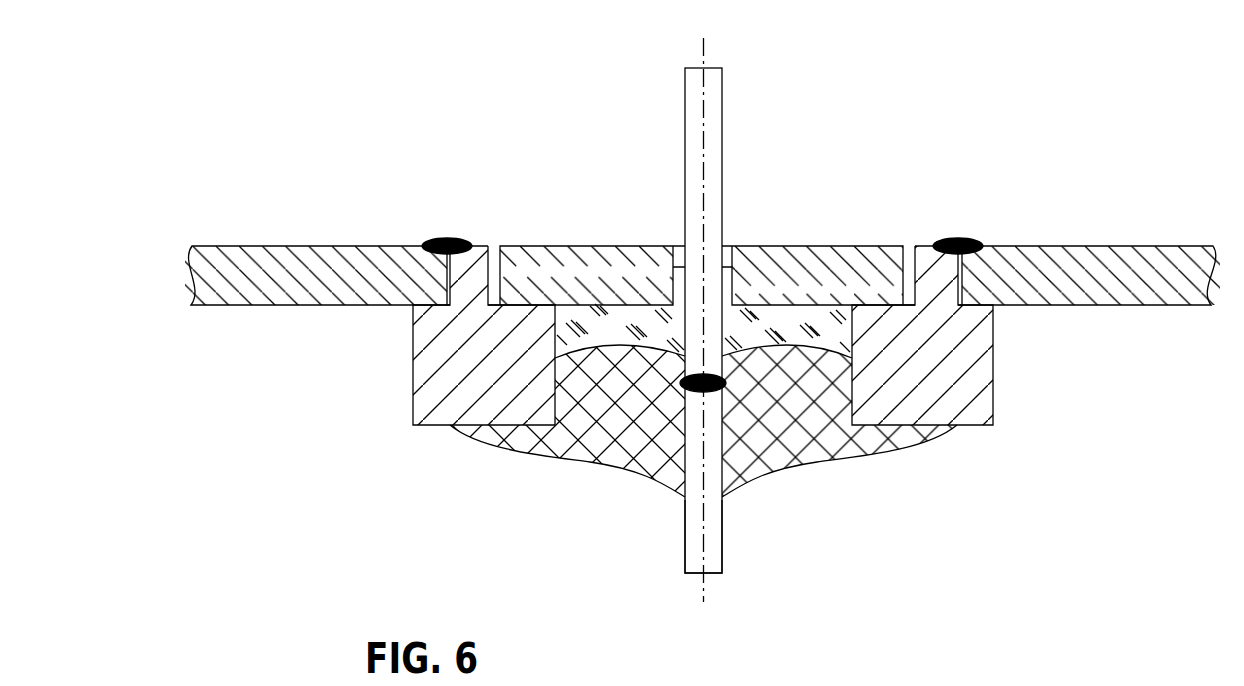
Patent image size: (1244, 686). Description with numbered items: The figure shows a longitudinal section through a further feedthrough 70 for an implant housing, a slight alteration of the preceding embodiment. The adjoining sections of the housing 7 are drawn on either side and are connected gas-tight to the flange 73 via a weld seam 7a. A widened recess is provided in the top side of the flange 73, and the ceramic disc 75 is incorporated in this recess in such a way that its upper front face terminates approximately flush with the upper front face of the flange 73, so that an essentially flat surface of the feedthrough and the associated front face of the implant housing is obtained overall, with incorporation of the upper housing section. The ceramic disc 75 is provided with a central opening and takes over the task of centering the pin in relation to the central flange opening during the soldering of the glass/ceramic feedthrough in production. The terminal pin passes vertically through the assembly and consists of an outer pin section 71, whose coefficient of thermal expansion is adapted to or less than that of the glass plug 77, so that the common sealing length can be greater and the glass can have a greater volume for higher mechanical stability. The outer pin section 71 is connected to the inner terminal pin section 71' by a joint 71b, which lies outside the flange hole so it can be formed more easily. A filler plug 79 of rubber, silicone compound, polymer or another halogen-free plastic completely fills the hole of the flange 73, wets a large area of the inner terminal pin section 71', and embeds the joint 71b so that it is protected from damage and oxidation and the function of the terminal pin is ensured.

The feedthrough 70 is at (1010, 100).
The housing 7 is at (1090, 250).
The weld seam 7a is at (960, 242).
The pin section 71 is at (748, 320).
The inner terminal pin section 71' is at (751, 536).
The joint 71b is at (703, 392).
The flange 73 is at (982, 353).
The ceramic disc 75 is at (852, 252).
The glass plug 77 is at (632, 325).
The filler plug 79 is at (643, 458).